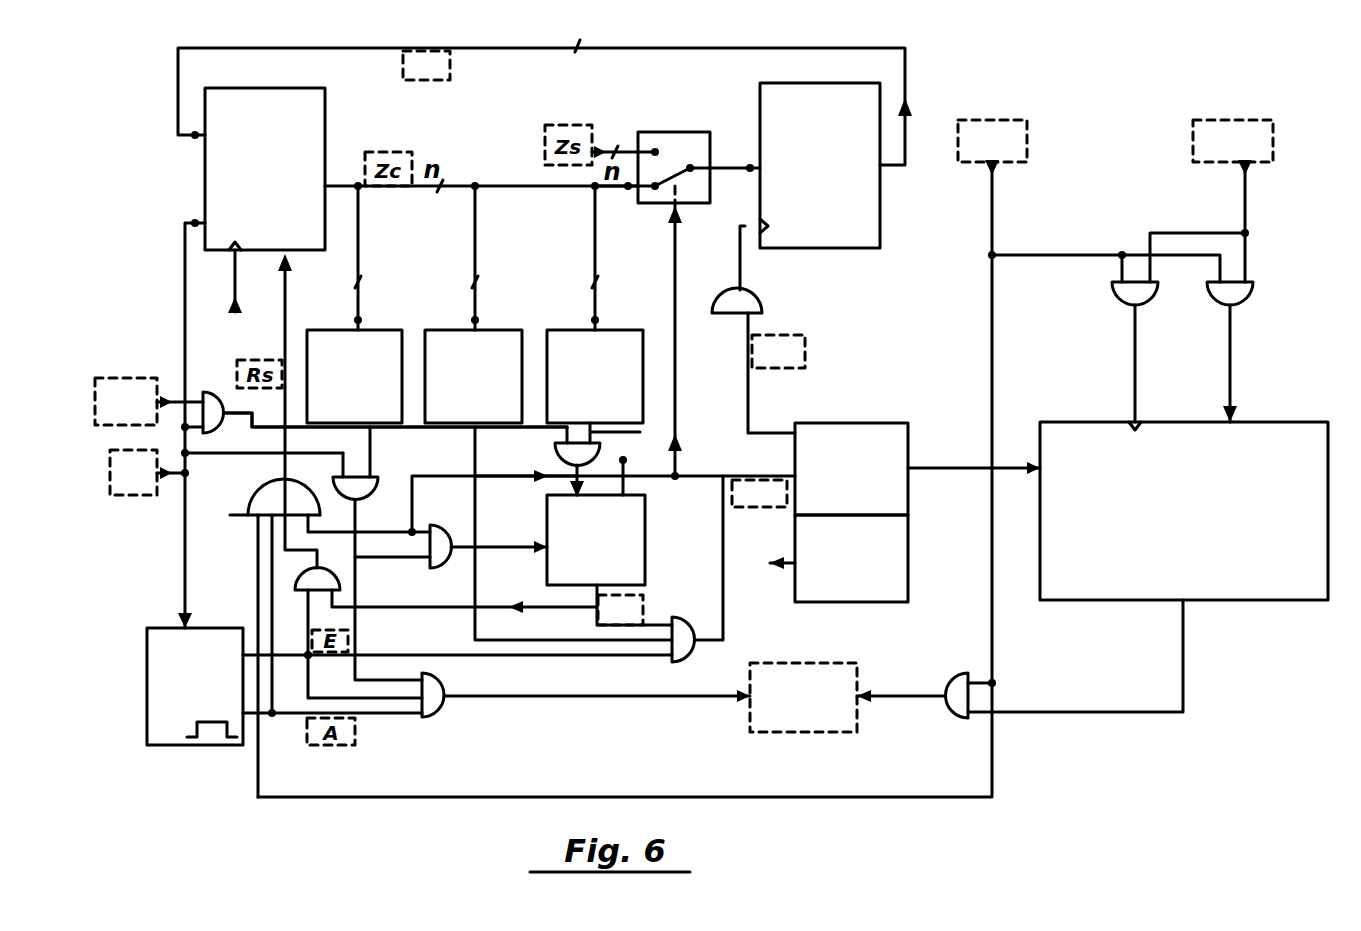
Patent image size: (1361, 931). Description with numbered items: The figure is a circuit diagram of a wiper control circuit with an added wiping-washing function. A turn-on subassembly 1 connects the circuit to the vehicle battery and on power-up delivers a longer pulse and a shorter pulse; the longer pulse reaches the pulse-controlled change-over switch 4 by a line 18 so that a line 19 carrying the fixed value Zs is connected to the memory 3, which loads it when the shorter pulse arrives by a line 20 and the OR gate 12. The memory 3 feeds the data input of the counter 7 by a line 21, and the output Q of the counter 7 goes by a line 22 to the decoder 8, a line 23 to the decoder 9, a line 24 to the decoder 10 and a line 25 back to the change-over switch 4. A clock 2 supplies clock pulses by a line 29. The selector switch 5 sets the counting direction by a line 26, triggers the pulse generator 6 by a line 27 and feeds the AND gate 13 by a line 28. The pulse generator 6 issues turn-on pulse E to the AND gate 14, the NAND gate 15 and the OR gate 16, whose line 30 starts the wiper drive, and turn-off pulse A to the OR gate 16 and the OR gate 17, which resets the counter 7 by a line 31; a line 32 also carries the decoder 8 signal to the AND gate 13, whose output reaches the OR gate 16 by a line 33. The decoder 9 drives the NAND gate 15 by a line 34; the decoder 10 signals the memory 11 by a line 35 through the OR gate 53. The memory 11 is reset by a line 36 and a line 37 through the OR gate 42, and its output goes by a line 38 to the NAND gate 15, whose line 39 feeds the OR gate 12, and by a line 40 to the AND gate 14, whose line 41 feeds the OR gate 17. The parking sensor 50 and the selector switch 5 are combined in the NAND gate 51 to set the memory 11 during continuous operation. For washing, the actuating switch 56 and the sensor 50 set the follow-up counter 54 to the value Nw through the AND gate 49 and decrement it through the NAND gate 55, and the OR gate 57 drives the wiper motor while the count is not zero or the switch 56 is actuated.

The turn-on subassembly 1 is at (850, 425).
The clock 2 is at (862, 597).
The memory 3 is at (850, 250).
The pulse-controlled change-over switch 4 is at (678, 132).
The selector switch 5 is at (146, 497).
The pulse generator 6 is at (175, 747).
The counter 7 is at (312, 118).
The decoder 8 is at (368, 335).
The decoder 9 is at (495, 335).
The decoder 10 is at (610, 335).
The memory 11 is at (647, 531).
The OR gate 12 is at (752, 299).
The AND gate 13 is at (333, 483).
The AND gate 14 is at (295, 583).
The NAND gate 15 is at (695, 663).
The OR gate 16 is at (440, 718).
The OR gate 17 is at (306, 638).
The line 18 is at (678, 232).
The line 19 is at (632, 148).
The line 20 is at (755, 395).
The line 21 is at (523, 47).
The line 22 is at (360, 232).
The line 23 is at (478, 232).
The line 24 is at (592, 232).
The line 25 is at (615, 195).
The line 26 is at (180, 283).
The line 27 is at (180, 548).
The line 28 is at (225, 456).
The line 29 is at (238, 283).
The line 30 is at (558, 705).
The line 31 is at (288, 283).
The line 32 is at (373, 449).
The line 33 is at (358, 583).
The line 34 is at (478, 519).
The line 35 is at (632, 434).
The line 36 is at (407, 562).
The line 37 is at (503, 474).
The line 38 is at (665, 616).
The line 39 is at (728, 637).
The line 40 is at (436, 612).
The line 41 is at (280, 548).
The OR gate 42 is at (440, 525).
The AND gate 49 is at (1247, 300).
The sensor 50 is at (1190, 143).
The NAND gate 51 is at (213, 394).
The OR gate 53 is at (558, 456).
The follow-up counter 54 is at (1076, 568).
The NAND gate 55 is at (1113, 298).
The actuating switch 56 is at (1030, 143).
The OR gate 57 is at (948, 673).